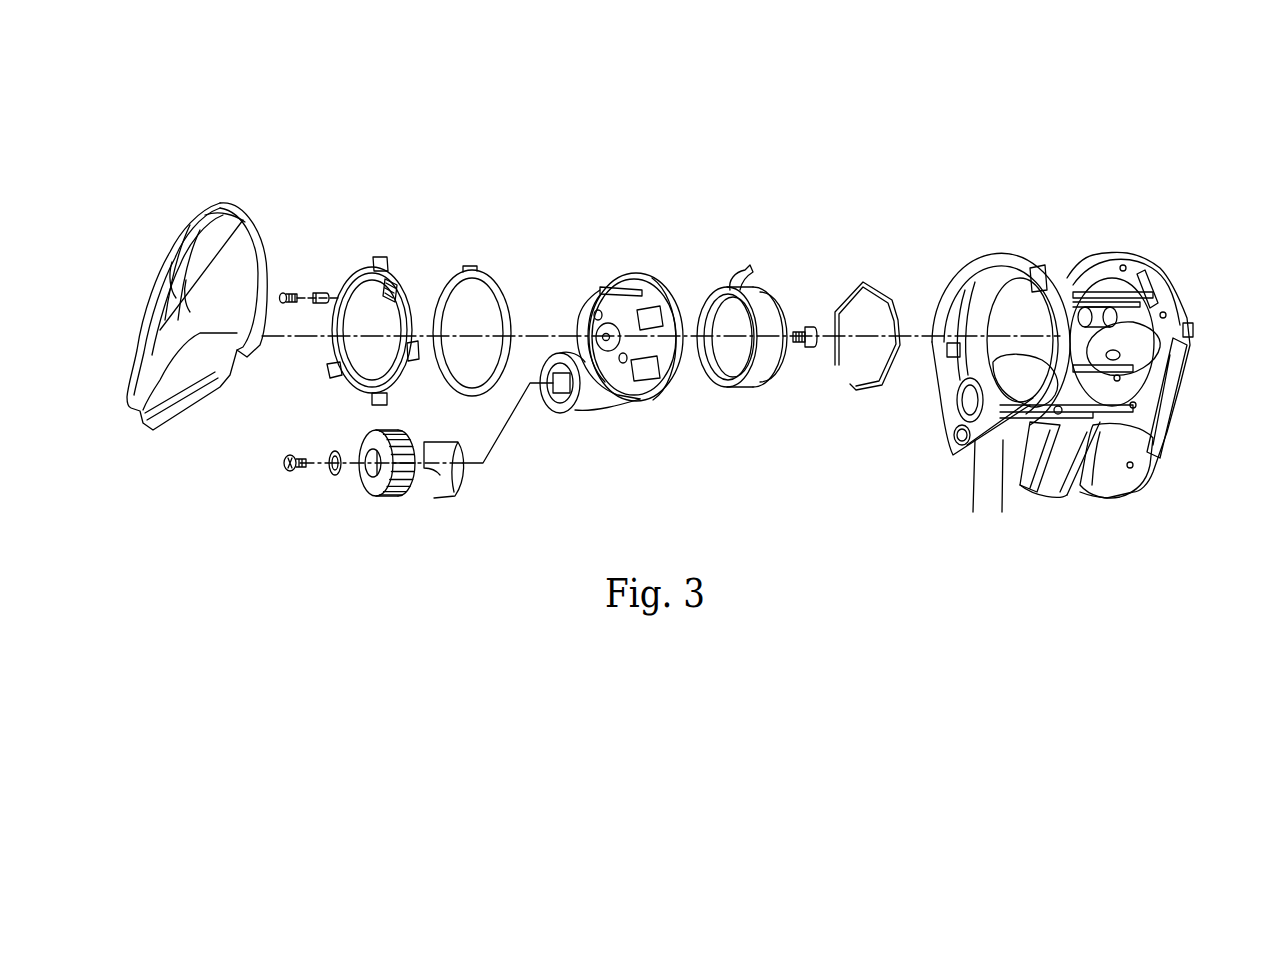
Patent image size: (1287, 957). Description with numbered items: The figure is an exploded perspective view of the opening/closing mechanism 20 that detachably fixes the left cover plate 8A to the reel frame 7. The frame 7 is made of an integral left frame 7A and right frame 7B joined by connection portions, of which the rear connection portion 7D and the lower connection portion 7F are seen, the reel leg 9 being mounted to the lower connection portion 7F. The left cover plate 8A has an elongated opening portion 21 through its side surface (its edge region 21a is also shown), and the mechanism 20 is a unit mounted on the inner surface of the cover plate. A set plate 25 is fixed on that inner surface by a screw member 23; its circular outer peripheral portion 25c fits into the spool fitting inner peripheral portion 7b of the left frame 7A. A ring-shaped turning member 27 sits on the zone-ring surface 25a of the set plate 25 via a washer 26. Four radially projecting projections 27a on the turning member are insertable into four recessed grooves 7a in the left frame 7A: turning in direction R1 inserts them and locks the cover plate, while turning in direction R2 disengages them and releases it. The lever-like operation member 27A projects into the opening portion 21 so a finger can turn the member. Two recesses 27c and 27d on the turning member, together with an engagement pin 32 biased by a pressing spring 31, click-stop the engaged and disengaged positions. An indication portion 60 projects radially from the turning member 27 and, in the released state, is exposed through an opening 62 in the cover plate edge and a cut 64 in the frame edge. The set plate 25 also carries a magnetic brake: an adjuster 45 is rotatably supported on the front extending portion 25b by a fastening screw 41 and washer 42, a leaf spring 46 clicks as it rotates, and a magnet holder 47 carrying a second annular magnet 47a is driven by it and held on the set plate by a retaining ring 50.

The frame 7 is at (1080, 368).
The recessed grooves 7a is at (1030, 258).
The left frame 7A is at (980, 430).
The spool fitting inner peripheral portion 7b is at (1000, 357).
The right frame 7B is at (1187, 330).
The rear connection portion 7D is at (1147, 290).
The lower connection portion 7F is at (1120, 422).
The left cover plate 8A is at (217, 220).
The reel leg 9 is at (1053, 488).
The opening/closing mechanism 20 is at (641, 274).
The opening portion 21 is at (193, 284).
The side cover rim 21a is at (187, 230).
The screw member 23 is at (803, 327).
The set plate 25 is at (639, 331).
The zone-ring surface 25a is at (623, 273).
The front extending portion 25b is at (600, 410).
The circular outer peripheral portion 25c is at (673, 287).
The washer 26 is at (477, 270).
The turning member 27 is at (373, 352).
The projections 27a is at (414, 350).
The operation member 27A is at (376, 262).
The recess 27c is at (400, 342).
The recess 27d is at (397, 383).
The pressing spring 31 is at (283, 302).
The engagement pin 32 is at (317, 303).
The fastening screw 41 is at (287, 478).
The washer 42 is at (337, 475).
The adjuster 45 is at (377, 483).
The leaf spring 46 is at (460, 483).
The magnet holder 47 is at (773, 378).
The second annular magnet 47a is at (767, 373).
The retaining ring 50 is at (887, 297).
The indication portion 60 is at (336, 368).
The opening 62 is at (193, 412).
The cut 64 is at (1058, 410).
The direction R1 is at (427, 370).
The direction R2 is at (335, 269).